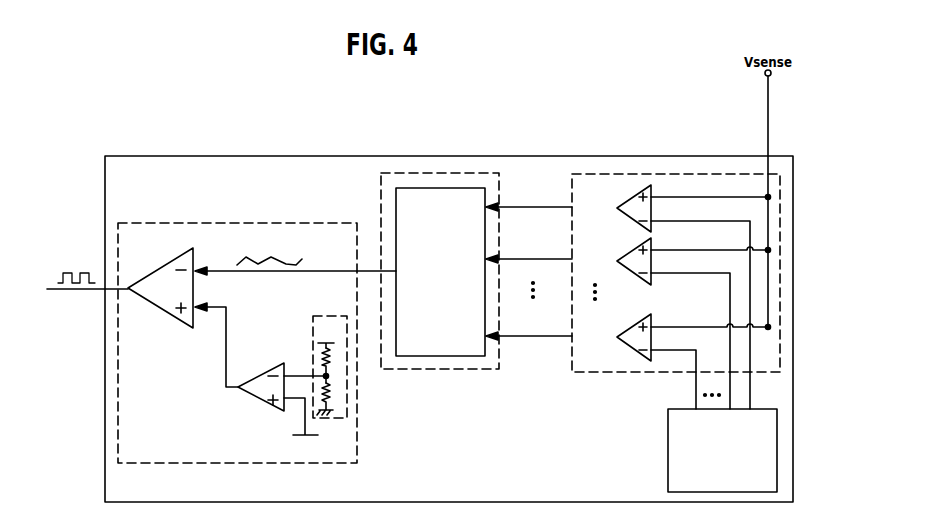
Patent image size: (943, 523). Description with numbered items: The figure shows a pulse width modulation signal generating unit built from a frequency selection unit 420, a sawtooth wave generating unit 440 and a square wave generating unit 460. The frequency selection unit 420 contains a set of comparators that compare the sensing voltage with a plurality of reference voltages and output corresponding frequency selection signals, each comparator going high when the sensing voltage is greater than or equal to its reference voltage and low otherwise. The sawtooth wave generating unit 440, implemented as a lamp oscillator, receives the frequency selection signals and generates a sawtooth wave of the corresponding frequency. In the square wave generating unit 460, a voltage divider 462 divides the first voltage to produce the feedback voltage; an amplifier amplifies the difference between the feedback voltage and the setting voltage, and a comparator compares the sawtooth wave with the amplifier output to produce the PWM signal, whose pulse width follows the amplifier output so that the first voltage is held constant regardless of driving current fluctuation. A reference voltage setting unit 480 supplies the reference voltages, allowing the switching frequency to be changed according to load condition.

The frequency selection unit 420 is at (685, 174).
The sawtooth wave generating unit 440 is at (447, 173).
The square wave generating unit 460 is at (228, 223).
The voltage divider 462 is at (326, 316).
The reference voltage setting unit 480 is at (668, 436).